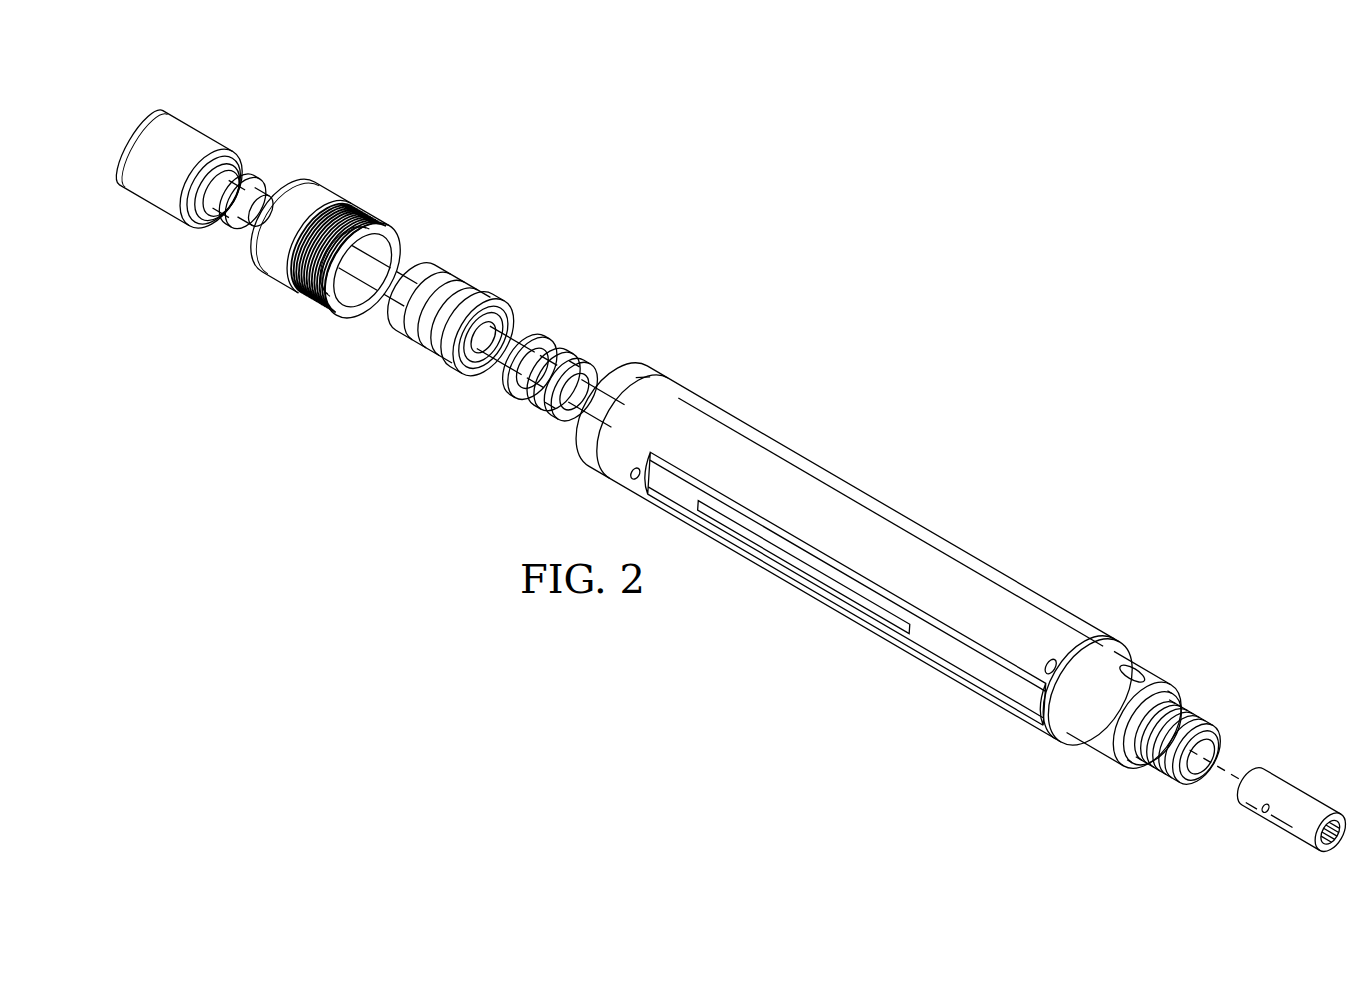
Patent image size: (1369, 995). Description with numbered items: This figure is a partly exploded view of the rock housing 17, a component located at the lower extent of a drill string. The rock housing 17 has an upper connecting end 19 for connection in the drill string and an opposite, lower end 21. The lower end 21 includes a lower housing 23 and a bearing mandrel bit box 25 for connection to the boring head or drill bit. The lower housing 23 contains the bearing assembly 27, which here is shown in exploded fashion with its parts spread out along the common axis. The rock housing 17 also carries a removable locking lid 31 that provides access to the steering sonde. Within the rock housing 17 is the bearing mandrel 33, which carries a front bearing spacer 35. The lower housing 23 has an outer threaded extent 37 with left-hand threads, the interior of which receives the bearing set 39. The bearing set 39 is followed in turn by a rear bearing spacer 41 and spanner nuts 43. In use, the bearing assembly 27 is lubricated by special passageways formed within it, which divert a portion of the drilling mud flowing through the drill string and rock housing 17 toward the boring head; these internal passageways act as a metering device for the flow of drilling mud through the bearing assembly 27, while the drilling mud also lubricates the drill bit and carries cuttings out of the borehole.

The rock housing 17 is at (916, 589).
The upper connecting end 19 is at (1300, 765).
The lower end 21 is at (206, 166).
The lower housing 23 is at (325, 227).
The bearing mandrel bit box 25 is at (177, 123).
The bearing assembly 27 is at (481, 322).
The removable locking lid 31 is at (990, 680).
The bearing mandrel 33 is at (271, 196).
The front bearing spacer 35 is at (238, 234).
The outer threaded extent 37 is at (366, 217).
The bearing set 39 is at (414, 340).
The rear bearing spacer 41 is at (531, 340).
The spanner nuts 43 is at (569, 354).